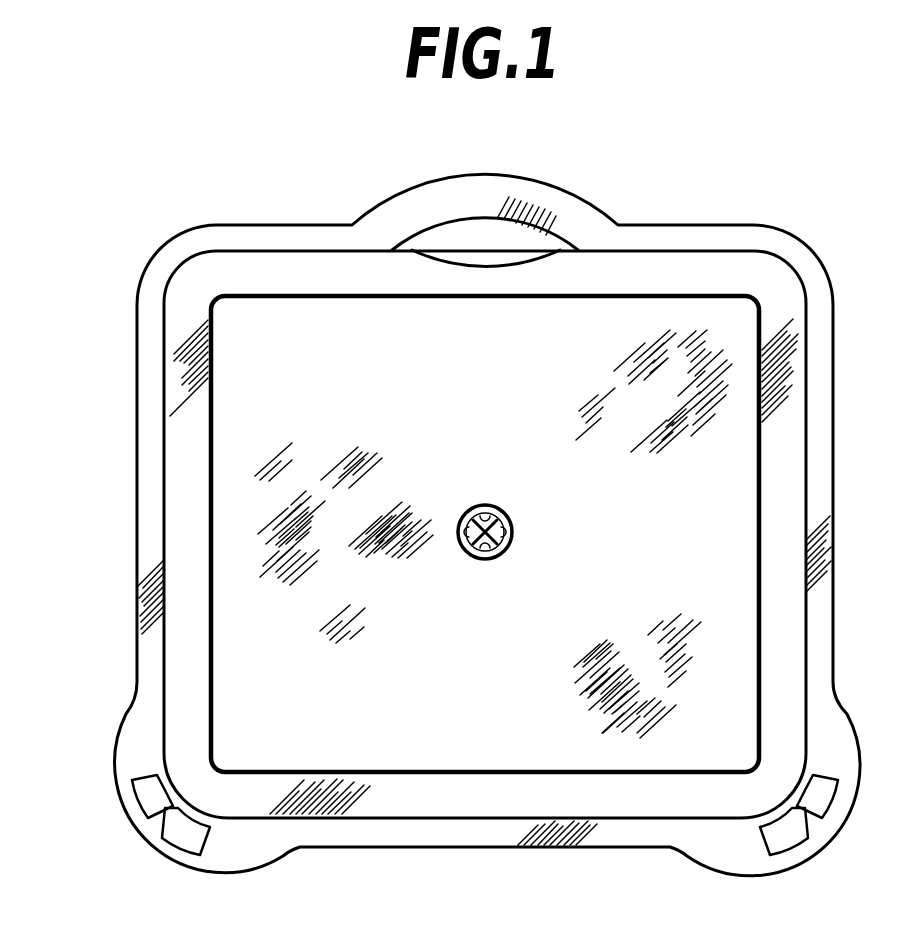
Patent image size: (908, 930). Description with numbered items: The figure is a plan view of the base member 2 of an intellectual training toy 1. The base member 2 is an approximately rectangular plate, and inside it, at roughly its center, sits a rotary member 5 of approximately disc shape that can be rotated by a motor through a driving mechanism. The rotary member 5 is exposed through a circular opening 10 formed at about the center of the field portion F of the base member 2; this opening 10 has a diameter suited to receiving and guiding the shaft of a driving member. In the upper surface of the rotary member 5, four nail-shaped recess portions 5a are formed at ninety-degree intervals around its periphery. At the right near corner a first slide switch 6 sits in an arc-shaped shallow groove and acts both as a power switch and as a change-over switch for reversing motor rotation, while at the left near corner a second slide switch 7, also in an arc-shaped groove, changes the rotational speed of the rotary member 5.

The intellectual training toy 1 is at (497, 135).
The base member 2 is at (788, 616).
The field portion F is at (748, 338).
The rotary member 5 is at (512, 507).
The recess portions 5a is at (467, 533).
The circular opening 10 is at (467, 553).
The first slide switch 6 is at (805, 812).
The second slide switch 7 is at (158, 803).